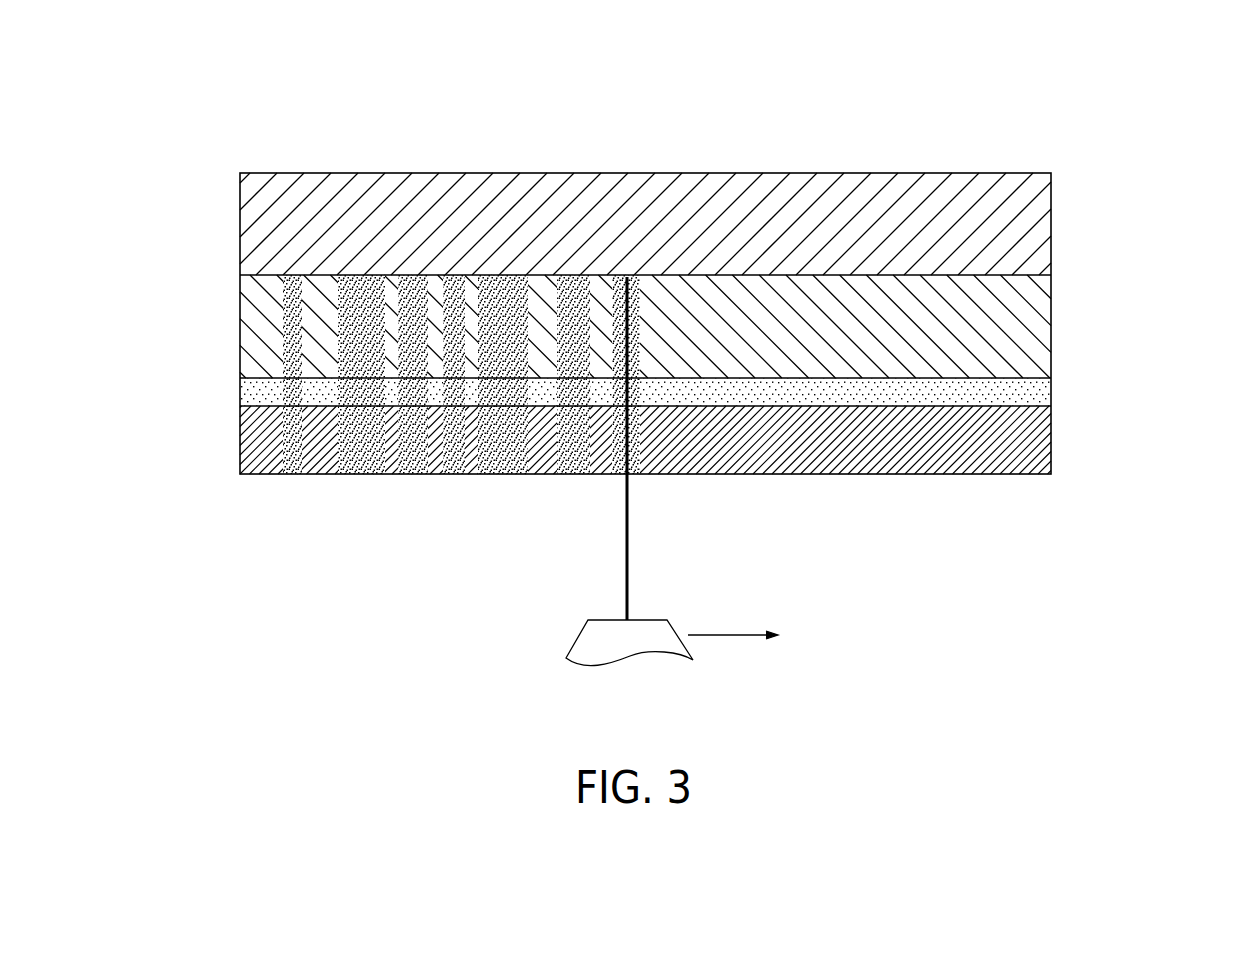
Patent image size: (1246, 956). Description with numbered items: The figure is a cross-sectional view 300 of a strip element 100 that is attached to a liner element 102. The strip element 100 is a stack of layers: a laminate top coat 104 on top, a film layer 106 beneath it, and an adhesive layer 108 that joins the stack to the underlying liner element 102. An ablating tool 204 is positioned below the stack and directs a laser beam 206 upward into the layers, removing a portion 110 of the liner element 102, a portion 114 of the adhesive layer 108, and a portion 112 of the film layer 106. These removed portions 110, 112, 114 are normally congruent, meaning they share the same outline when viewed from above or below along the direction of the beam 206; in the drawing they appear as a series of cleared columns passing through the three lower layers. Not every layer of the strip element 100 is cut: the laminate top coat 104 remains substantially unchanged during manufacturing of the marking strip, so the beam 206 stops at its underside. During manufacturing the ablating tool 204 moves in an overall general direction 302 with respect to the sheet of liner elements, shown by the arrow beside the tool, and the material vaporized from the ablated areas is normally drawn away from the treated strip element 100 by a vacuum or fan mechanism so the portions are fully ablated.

The cross-sectional view 300 is at (708, 80).
The strip element 100 is at (683, 323).
The liner element 102 is at (1052, 442).
The laminate top coat 104 is at (1052, 221).
The film layer 106 is at (1052, 333).
The adhesive layer 108 is at (1052, 390).
The portion of the liner element 110 is at (295, 316).
The portion of the film layer 112 is at (461, 374).
The portion of the adhesive layer 114 is at (461, 374).
The ablating tool 204 is at (575, 642).
The beam 206 is at (630, 535).
The overall general direction 302 is at (729, 630).